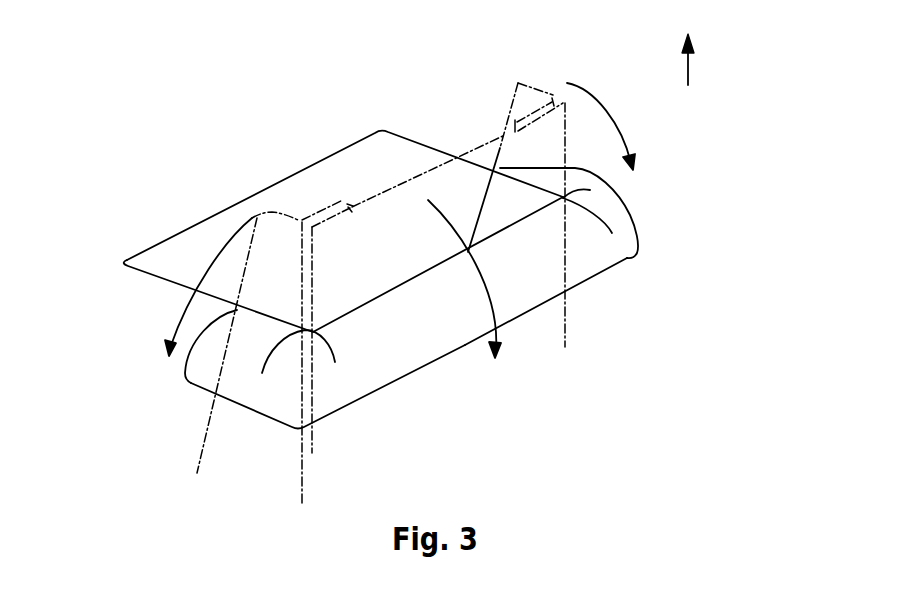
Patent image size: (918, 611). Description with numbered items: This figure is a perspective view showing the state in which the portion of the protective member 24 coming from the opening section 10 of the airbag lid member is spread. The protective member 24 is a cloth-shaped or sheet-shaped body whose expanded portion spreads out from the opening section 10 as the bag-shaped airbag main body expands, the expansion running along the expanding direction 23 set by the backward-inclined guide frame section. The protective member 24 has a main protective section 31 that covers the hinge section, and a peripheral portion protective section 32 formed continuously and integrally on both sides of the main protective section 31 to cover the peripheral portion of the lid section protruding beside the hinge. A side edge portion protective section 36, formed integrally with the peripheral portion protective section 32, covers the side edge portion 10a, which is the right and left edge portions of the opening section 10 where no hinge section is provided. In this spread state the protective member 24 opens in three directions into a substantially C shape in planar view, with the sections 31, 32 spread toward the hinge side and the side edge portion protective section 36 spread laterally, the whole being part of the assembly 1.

The vehicle body structure (side member 8) 1 is at (213, 207).
The opening section 10 is at (317, 178).
The side edge portion 10a is at (160, 276).
The expanding direction 23 is at (690, 66).
The protective member 24 is at (484, 113).
The main protective section 31 is at (600, 271).
The peripheral portion protective section 32 is at (381, 387).
The side edge portion protective section 36 is at (200, 387).